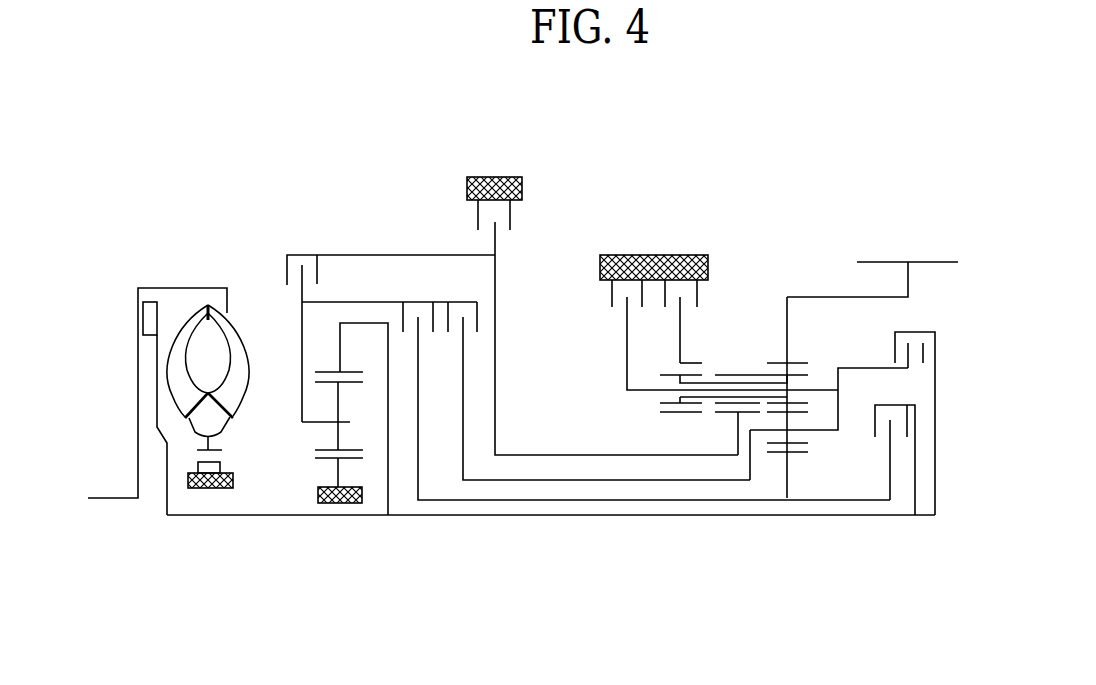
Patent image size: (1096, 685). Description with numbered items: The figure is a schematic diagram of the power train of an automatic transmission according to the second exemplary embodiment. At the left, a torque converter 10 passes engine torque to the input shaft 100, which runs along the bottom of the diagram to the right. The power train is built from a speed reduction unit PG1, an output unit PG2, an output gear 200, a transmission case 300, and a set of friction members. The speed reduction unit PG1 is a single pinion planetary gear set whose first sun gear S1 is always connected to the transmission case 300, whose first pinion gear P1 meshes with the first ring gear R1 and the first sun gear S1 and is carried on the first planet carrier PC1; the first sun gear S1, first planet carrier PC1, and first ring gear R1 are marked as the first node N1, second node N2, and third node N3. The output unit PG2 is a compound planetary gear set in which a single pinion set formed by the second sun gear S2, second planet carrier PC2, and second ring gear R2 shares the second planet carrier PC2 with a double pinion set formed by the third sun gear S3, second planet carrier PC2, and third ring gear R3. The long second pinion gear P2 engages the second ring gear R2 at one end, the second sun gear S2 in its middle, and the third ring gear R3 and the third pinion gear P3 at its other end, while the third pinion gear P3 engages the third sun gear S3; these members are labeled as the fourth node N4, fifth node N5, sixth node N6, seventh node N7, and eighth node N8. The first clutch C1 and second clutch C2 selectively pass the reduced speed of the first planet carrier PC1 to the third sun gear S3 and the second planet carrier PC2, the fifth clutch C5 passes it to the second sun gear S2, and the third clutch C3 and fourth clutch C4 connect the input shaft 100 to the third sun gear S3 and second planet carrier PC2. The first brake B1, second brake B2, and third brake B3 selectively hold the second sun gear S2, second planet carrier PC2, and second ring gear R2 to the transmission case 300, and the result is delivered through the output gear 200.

The torque converter 10 is at (237, 320).
The input shaft 100 is at (268, 518).
The output gear 200 is at (950, 282).
The transmission case 300 is at (505, 177).
The speed reduction unit PG1 is at (331, 461).
The output unit PG2 is at (745, 449).
The first clutch C1 is at (646, 387).
The second clutch C2 is at (599, 377).
The third clutch C3 is at (895, 446).
The fourth clutch C4 is at (919, 408).
The fifth clutch C5 is at (391, 324).
The first brake B1 is at (593, 327).
The second brake B2 is at (710, 335).
The third brake B3 is at (695, 321).
The first sun gear S1 is at (320, 468).
The first planet carrier PC1 is at (308, 434).
The first ring gear R1 is at (345, 416).
The first pinion gear P1 is at (352, 416).
The second sun gear S2 is at (710, 433).
The second planet carrier PC2 is at (695, 410).
The second ring gear R2 is at (672, 337).
The second pinion gear P2 is at (744, 372).
The third pinion gear P3 is at (829, 397).
The third sun gear S3 is at (807, 462).
The third ring gear R3 is at (809, 349).
The first node N1 is at (320, 468).
The second node N2 is at (308, 434).
The third node N3 is at (345, 416).
The fourth node N4 is at (710, 433).
The fifth node N5 is at (695, 410).
The sixth node N6 is at (672, 337).
The seventh node N7 is at (809, 349).
The eighth node N8 is at (807, 462).